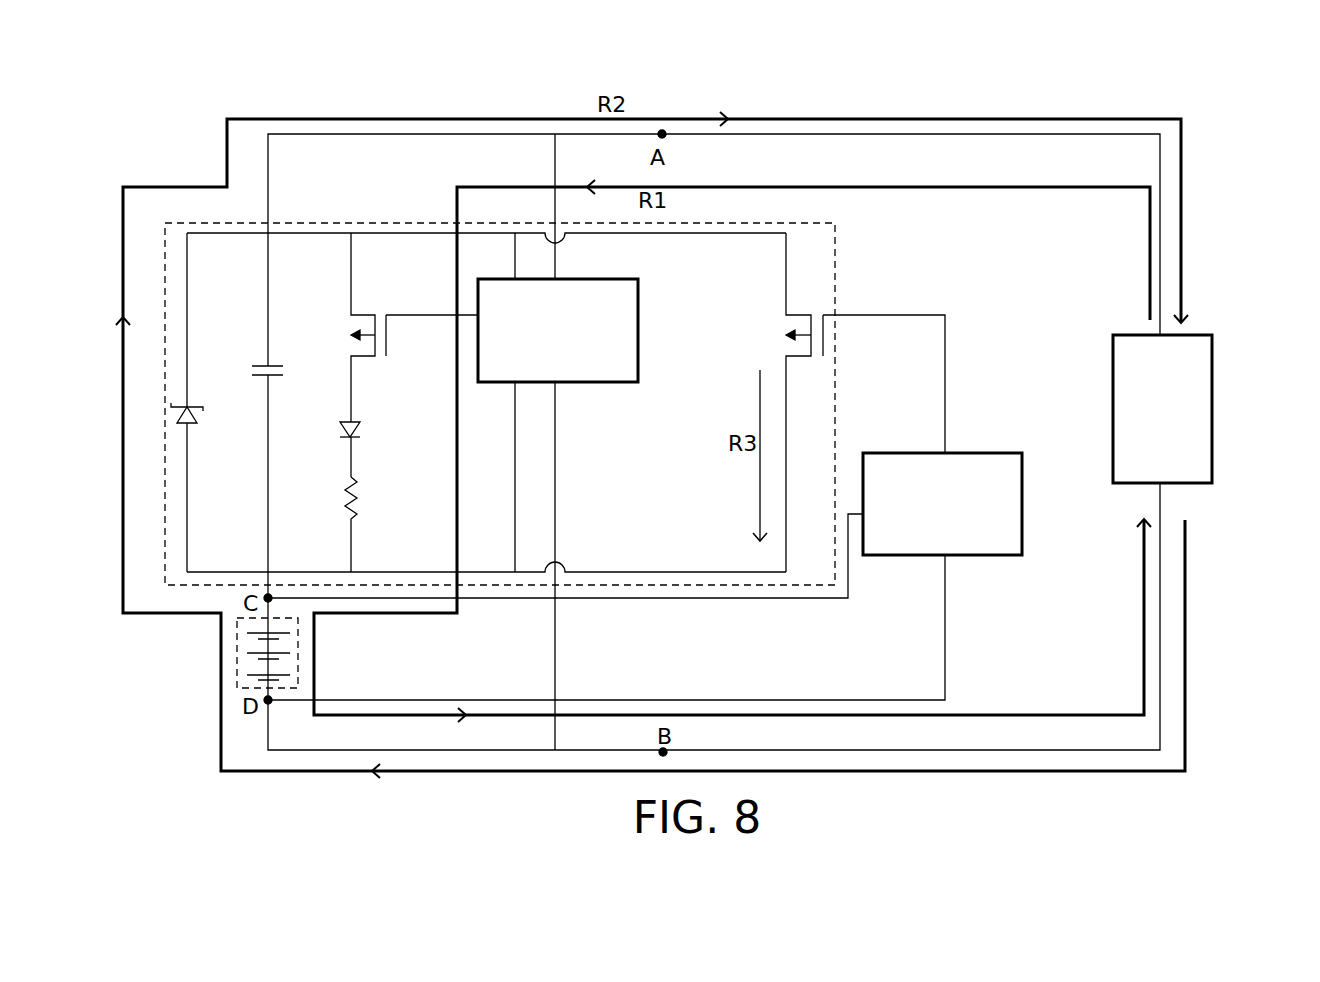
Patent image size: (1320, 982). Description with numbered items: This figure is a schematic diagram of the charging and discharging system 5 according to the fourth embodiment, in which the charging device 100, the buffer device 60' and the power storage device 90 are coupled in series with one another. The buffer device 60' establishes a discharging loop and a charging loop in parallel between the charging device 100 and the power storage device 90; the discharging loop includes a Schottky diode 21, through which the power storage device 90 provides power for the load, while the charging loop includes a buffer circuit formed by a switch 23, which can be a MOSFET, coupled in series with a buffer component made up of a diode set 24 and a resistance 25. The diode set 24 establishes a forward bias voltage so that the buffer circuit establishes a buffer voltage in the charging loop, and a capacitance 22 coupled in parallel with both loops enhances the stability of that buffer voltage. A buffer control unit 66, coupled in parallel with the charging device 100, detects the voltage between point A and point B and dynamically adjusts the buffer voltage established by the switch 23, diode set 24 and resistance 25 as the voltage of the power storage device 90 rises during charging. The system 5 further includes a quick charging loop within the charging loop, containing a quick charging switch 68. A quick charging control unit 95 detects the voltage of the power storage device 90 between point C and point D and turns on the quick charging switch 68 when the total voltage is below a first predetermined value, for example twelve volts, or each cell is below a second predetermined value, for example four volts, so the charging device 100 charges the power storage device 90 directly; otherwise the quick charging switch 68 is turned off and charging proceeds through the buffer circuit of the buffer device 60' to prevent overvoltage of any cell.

The charging and discharging system 5 is at (1226, 126).
The buffer device 60' is at (500, 359).
The Schottky diode 21 is at (178, 395).
The capacitance 22 is at (263, 358).
The switch 23 is at (348, 346).
The diode set 24 is at (343, 433).
The resistance 25 is at (345, 503).
The buffer control unit 66 is at (640, 318).
The quick charging switch 68 is at (785, 344).
The power storage device 90 is at (300, 655).
The quick charging control unit 95 is at (1022, 492).
The charging device 100 is at (1212, 410).